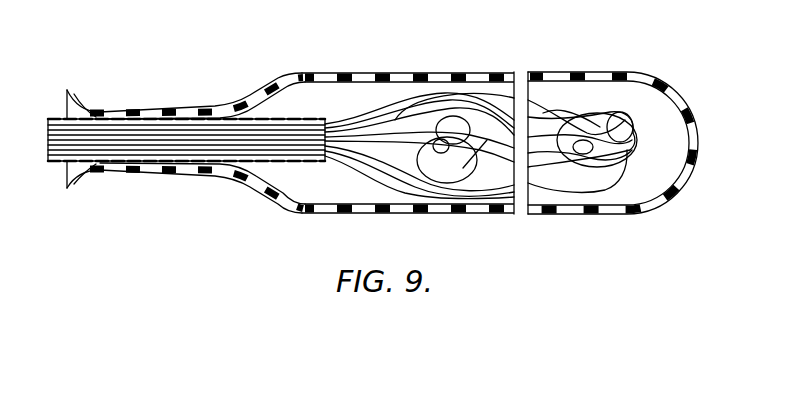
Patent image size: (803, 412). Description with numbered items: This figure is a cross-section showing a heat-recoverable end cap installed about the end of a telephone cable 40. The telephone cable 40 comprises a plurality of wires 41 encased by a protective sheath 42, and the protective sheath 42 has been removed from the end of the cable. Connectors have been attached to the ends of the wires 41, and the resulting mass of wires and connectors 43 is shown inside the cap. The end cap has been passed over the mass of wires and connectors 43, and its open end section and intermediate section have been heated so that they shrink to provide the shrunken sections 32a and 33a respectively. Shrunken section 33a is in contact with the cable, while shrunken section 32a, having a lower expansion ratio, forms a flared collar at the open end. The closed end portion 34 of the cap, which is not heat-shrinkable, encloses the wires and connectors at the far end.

The shrunken section 32a is at (81, 100).
The shrunken section 33a is at (132, 164).
The closed end portion 34 is at (391, 213).
The telephone cable 40 is at (63, 118).
The wires 41 is at (86, 172).
The protective sheath 42 is at (290, 166).
The mass of wires and connectors 43 is at (467, 180).